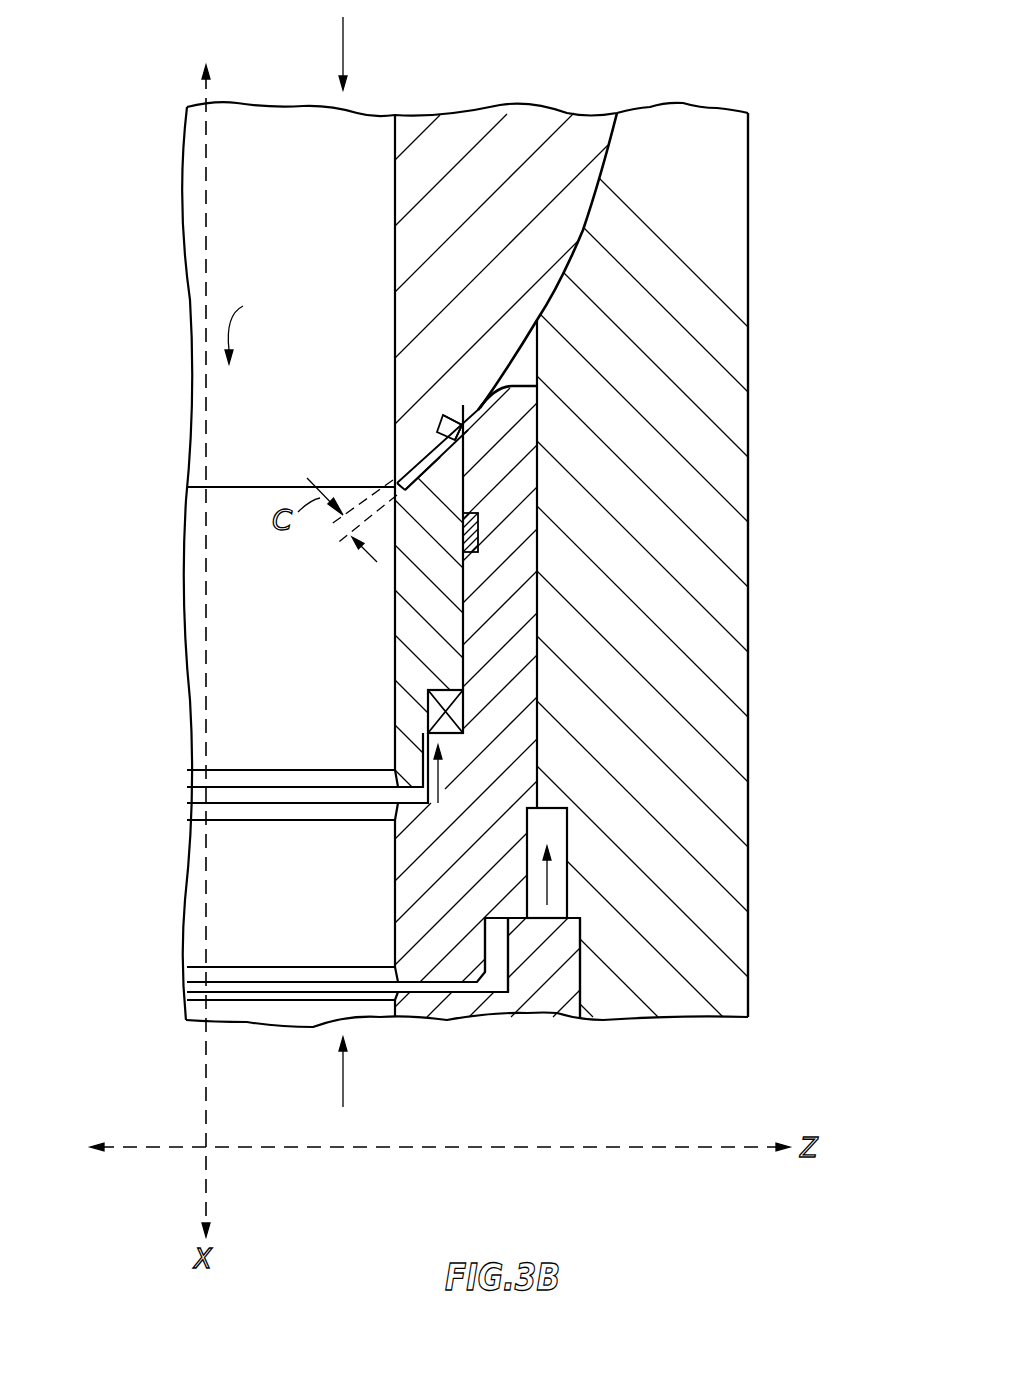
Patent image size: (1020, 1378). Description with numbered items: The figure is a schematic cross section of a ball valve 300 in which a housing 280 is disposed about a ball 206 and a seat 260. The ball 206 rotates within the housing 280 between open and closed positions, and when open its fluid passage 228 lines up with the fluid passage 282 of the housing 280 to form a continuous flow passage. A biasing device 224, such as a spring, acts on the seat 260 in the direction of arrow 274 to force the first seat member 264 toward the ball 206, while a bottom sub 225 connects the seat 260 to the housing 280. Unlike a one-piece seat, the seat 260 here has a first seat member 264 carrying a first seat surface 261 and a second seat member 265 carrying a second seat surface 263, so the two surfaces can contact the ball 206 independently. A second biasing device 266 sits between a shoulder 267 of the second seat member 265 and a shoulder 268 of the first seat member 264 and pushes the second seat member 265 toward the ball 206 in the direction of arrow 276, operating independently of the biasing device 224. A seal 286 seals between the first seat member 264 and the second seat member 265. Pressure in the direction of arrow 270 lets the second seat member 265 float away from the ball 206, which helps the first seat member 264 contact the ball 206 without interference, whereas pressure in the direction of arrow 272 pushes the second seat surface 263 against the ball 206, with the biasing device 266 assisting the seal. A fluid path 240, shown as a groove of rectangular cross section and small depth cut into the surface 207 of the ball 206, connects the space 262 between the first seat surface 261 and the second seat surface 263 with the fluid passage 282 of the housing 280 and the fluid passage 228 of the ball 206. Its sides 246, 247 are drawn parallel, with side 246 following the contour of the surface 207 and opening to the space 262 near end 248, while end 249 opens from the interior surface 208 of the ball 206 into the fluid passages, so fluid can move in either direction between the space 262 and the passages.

The ball 206 is at (532, 175).
The surface of the ball 207 is at (585, 228).
The interior surface of the ball 208 is at (392, 206).
The biasing device 224 is at (568, 852).
The bottom sub 225 is at (547, 988).
The fluid passage of the ball 228 is at (255, 321).
The fluid path 240 is at (428, 445).
The side of the fluid path 246 is at (445, 425).
The side of the fluid path 247 is at (417, 448).
The end of the fluid path 248 is at (450, 412).
The end of the fluid path 249 is at (397, 483).
The seat 260 is at (545, 746).
The first seat surface 261 is at (490, 419).
The space 262 is at (460, 422).
The second seat surface 263 is at (408, 495).
The first seat member 264 is at (520, 535).
The second seat member 265 is at (397, 592).
The biasing device 266 is at (463, 717).
The shoulder of the second seat member 267 is at (445, 688).
The shoulder of the first seat member 268 is at (448, 735).
The arrow 270 is at (346, 30).
The arrow 272 is at (346, 1075).
The arrow 274 is at (552, 887).
The arrow 276 is at (432, 780).
The housing 280 is at (681, 514).
The fluid passage of the housing 282 is at (235, 888).
The seal 286 is at (478, 517).
The ball valve 300 is at (772, 540).